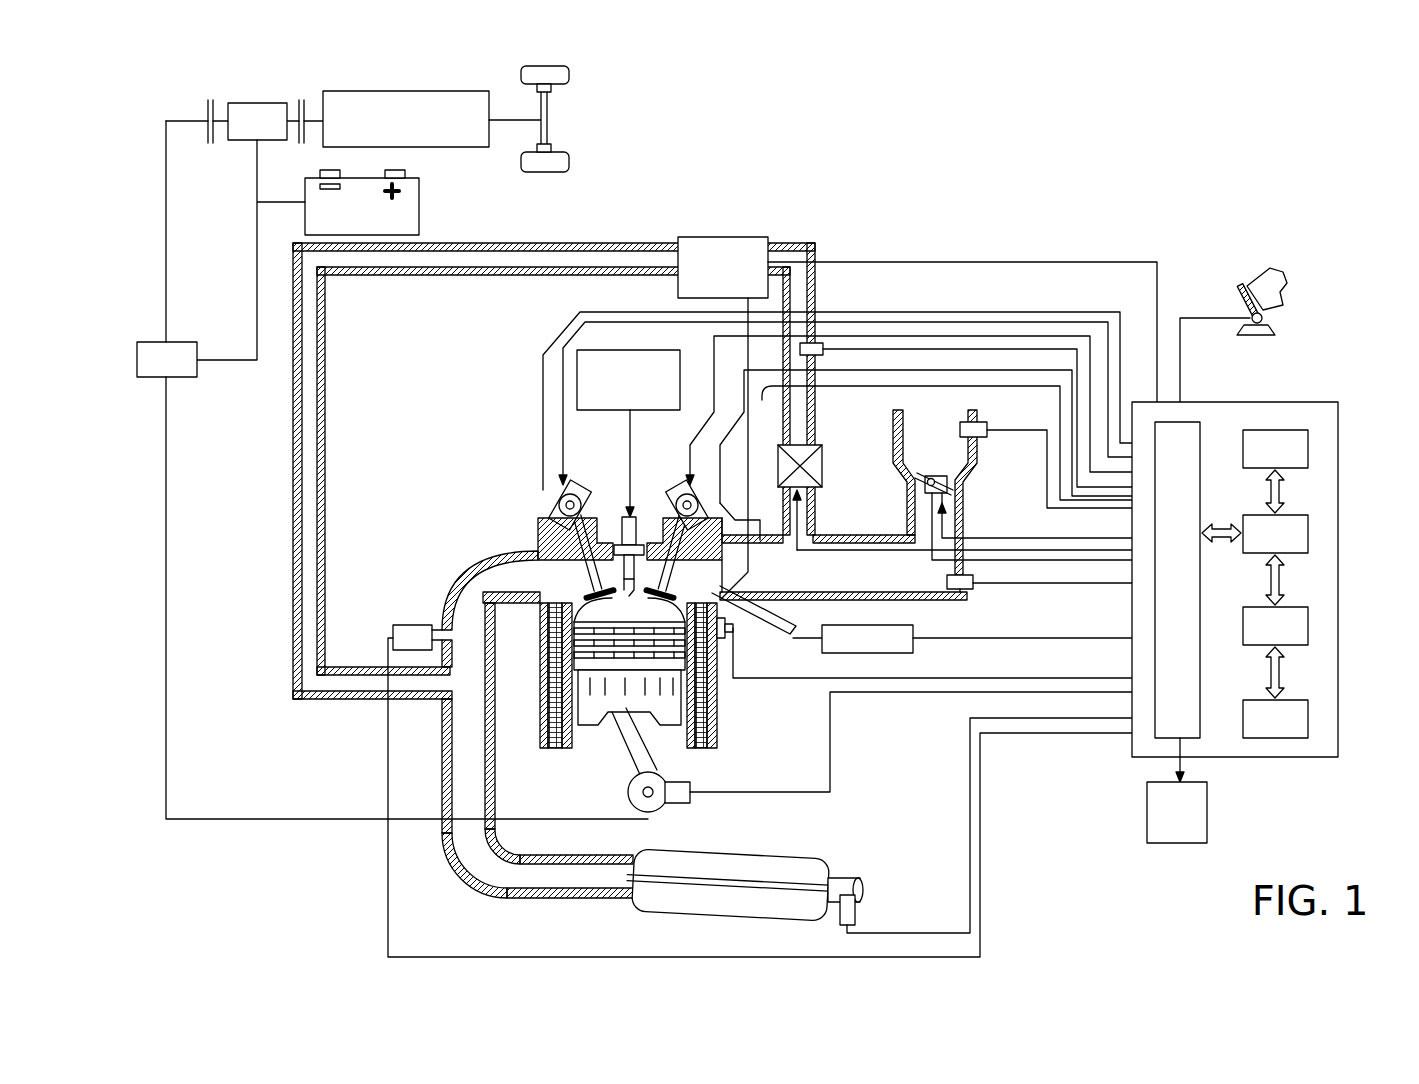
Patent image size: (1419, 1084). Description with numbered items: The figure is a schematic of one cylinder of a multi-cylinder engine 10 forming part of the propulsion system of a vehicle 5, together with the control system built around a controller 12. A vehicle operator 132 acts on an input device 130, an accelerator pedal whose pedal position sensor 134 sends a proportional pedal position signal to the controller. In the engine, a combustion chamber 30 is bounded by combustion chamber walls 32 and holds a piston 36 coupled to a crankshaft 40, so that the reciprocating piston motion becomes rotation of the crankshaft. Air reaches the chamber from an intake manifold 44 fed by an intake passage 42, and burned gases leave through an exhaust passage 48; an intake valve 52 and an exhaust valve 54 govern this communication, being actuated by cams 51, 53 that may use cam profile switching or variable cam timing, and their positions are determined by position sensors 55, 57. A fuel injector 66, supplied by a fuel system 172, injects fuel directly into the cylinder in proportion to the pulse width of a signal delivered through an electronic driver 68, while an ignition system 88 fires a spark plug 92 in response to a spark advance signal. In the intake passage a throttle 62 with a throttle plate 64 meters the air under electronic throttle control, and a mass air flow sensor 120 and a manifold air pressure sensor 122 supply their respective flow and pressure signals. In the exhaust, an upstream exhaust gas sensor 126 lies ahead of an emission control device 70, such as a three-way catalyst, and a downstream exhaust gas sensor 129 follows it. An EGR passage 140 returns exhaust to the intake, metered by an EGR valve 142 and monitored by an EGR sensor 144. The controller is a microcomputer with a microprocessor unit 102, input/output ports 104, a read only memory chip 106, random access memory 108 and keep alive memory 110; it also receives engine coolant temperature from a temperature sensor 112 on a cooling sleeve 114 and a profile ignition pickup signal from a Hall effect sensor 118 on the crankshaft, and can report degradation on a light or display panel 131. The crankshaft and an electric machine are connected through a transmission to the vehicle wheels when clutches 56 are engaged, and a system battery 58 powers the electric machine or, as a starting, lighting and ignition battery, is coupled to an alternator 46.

The vehicle 5 is at (1252, 167).
The engine 10 is at (472, 474).
The controller 12 is at (1338, 403).
The combustion chamber 30 is at (545, 705).
The combustion chamber walls 32 is at (567, 755).
The piston 36 is at (612, 700).
The crankshaft 40 is at (640, 808).
The intake passage 42 is at (935, 492).
The intake manifold 44 is at (843, 567).
The alternator 46 is at (140, 377).
The exhaust passage 48 is at (537, 724).
The intake cam 51 is at (683, 490).
The intake valve 52 is at (240, 103).
The exhaust cam 53 is at (568, 488).
The exhaust valve 54 is at (465, 148).
The position sensor 55 is at (521, 74).
The clutch 56 is at (208, 108).
The position sensor 57 is at (557, 500).
The system battery 58 is at (419, 205).
The throttle 62 is at (953, 490).
The throttle plate 64 is at (920, 484).
The fuel injector 66 is at (740, 612).
The electronic driver 68 is at (840, 653).
The emission control device 70 is at (790, 858).
The ignition system 88 is at (580, 352).
The spark plug 92 is at (632, 517).
The microprocessor unit 102 is at (1308, 522).
The input/output ports 104 is at (1202, 428).
The read only memory chip 106 is at (1308, 440).
The random access memory 108 is at (1308, 618).
The keep alive memory 110 is at (1308, 710).
The temperature sensor 112 is at (733, 640).
The cooling sleeve 114 is at (715, 710).
The Hall effect sensor 118 is at (680, 803).
The mass air flow sensor 120 is at (980, 422).
The manifold air pressure sensor 122 is at (970, 590).
The upstream exhaust gas sensor 126 is at (393, 628).
The downstream exhaust gas sensor 129 is at (855, 912).
The input device 130 is at (1240, 298).
The light or display panel 131 is at (1177, 790).
The vehicle operator 132 is at (1288, 285).
The pedal position sensor 134 is at (1264, 320).
The EGR passage 140 is at (550, 243).
The EGR valve 142 is at (822, 470).
The EGR sensor 144 is at (822, 355).
The fuel system 172 is at (735, 237).